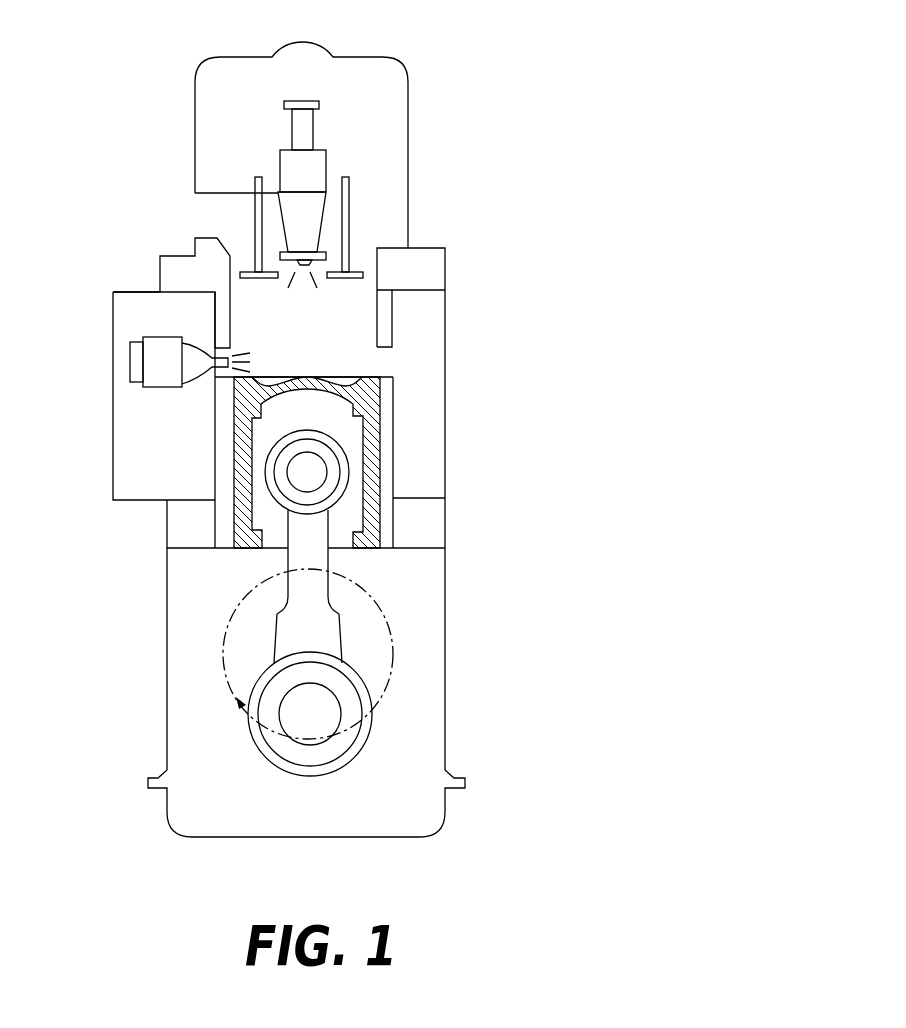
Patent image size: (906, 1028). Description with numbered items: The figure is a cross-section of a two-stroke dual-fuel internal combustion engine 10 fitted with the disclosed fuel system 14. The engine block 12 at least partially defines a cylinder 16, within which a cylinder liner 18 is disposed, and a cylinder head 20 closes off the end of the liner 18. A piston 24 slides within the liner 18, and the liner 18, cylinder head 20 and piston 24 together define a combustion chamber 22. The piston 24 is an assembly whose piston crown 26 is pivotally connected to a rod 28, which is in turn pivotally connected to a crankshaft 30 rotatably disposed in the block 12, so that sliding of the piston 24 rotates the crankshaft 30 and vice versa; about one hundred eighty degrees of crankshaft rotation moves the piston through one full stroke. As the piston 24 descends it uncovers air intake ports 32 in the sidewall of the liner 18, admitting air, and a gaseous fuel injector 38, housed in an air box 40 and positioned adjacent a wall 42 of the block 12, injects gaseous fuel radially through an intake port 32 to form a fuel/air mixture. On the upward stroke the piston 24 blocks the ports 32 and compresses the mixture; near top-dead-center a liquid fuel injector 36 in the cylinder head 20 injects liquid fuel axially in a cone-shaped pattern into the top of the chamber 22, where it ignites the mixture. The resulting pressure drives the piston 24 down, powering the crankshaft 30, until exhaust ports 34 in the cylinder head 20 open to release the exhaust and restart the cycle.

The internal combustion engine 10 is at (514, 37).
The engine block 12 is at (180, 523).
The fuel system 14 is at (162, 332).
The cylinder 16 is at (392, 432).
The cylinder liner 18 is at (377, 337).
The cylinder head 20 is at (422, 273).
The combustion chamber 22 is at (313, 327).
The piston 24 is at (361, 625).
The piston crown 26 is at (372, 530).
The rod 28 is at (332, 558).
The crankshaft 30 is at (337, 712).
The air intake ports 32 is at (387, 360).
The exhaust ports 34 is at (357, 272).
The liquid fuel injector 36 is at (326, 172).
The gaseous fuel injector 38 is at (142, 393).
The air box 40 is at (130, 307).
The wall 42 is at (217, 453).